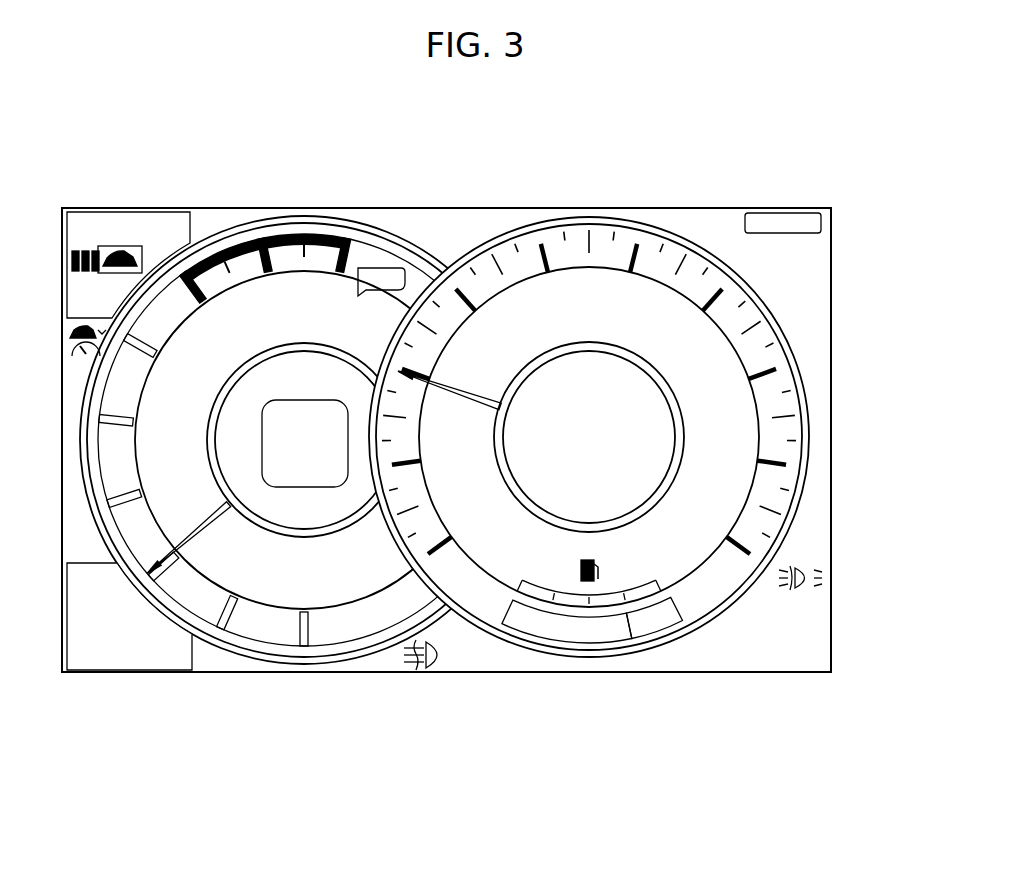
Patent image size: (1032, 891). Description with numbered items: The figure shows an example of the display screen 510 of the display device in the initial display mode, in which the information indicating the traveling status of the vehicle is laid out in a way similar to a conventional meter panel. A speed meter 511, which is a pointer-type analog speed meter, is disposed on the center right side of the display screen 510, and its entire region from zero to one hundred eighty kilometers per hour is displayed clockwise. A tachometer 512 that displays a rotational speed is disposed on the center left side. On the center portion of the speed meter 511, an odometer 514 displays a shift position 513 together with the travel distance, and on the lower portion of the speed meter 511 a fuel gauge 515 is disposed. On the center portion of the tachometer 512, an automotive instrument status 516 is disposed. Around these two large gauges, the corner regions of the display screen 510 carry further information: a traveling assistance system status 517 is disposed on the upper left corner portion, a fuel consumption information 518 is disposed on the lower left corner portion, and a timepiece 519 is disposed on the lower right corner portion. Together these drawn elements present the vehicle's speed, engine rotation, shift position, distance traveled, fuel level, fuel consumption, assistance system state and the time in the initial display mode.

The display screen 510 is at (718, 208).
The speed meter 511 is at (637, 220).
The tachometer 512 is at (372, 228).
The shift position 513 is at (590, 375).
The odometer 514 is at (669, 440).
The fuel gauge 515 is at (605, 648).
The automotive instrument status 516 is at (298, 402).
The traveling assistance system status 517 is at (190, 210).
The fuel consumption information 518 is at (130, 672).
The timepiece 519 is at (782, 669).